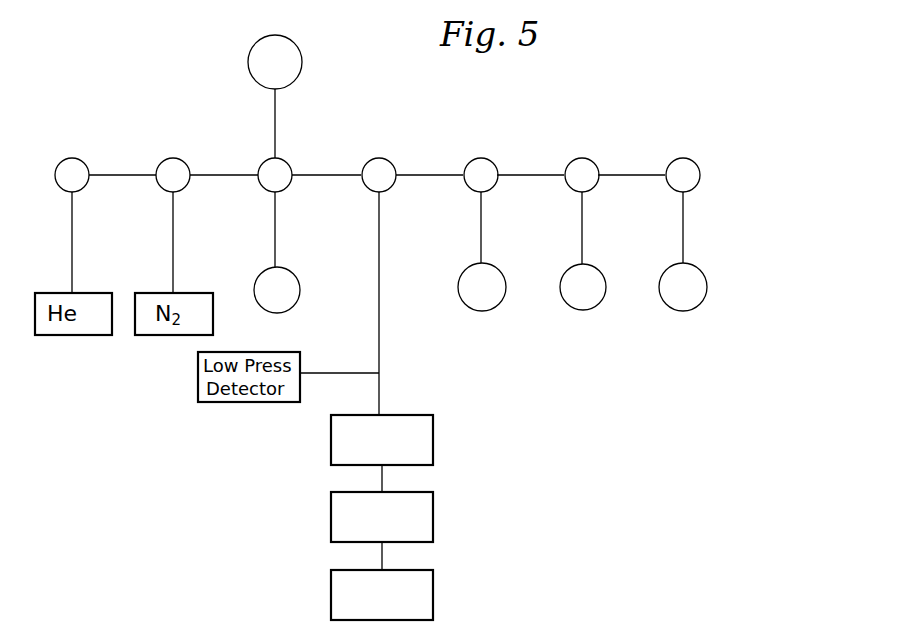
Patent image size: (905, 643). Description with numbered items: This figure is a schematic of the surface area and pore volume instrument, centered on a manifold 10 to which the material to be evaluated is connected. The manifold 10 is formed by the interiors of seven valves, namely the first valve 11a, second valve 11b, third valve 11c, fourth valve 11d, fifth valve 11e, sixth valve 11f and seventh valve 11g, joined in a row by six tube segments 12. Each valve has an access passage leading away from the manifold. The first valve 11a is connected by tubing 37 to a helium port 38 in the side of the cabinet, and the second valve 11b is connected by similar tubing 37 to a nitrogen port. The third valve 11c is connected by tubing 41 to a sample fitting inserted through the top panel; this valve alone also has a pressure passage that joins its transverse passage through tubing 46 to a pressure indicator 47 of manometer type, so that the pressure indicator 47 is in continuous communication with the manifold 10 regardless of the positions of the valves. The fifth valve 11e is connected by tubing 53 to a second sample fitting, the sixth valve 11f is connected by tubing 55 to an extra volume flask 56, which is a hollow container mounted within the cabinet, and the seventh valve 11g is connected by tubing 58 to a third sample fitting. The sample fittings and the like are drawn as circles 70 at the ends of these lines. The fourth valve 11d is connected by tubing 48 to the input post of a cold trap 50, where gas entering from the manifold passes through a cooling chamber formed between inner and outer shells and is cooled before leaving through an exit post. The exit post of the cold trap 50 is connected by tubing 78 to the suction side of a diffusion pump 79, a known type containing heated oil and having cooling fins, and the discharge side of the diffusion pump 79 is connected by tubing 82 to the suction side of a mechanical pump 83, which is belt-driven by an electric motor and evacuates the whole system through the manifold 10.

The manifold 10 is at (703, 175).
The first valve 11a is at (74, 160).
The second valve 11b is at (178, 160).
The third valve 11c is at (267, 187).
The fourth valve 11d is at (381, 160).
The fifth valve 11e is at (483, 158).
The sixth valve 11f is at (580, 158).
The seventh valve 11g is at (681, 158).
The tube segments 12 is at (120, 172).
The tubing 37 is at (72, 235).
The helium port 38 is at (173, 237).
The tubing 41 is at (276, 232).
The tubing 46 is at (276, 118).
The pressure indicator 47 is at (298, 61).
The tubing 48 is at (379, 246).
The cold trap 50 is at (434, 436).
The tubing 53 is at (482, 228).
The tubing 55 is at (583, 226).
The extra volume flask 56 is at (596, 269).
The tubing 58 is at (684, 227).
The trap 70 is at (299, 288).
The tubing 78 is at (385, 484).
The diffusion pump 79 is at (435, 518).
The tubing 82 is at (377, 556).
The mechanical pump 83 is at (437, 590).